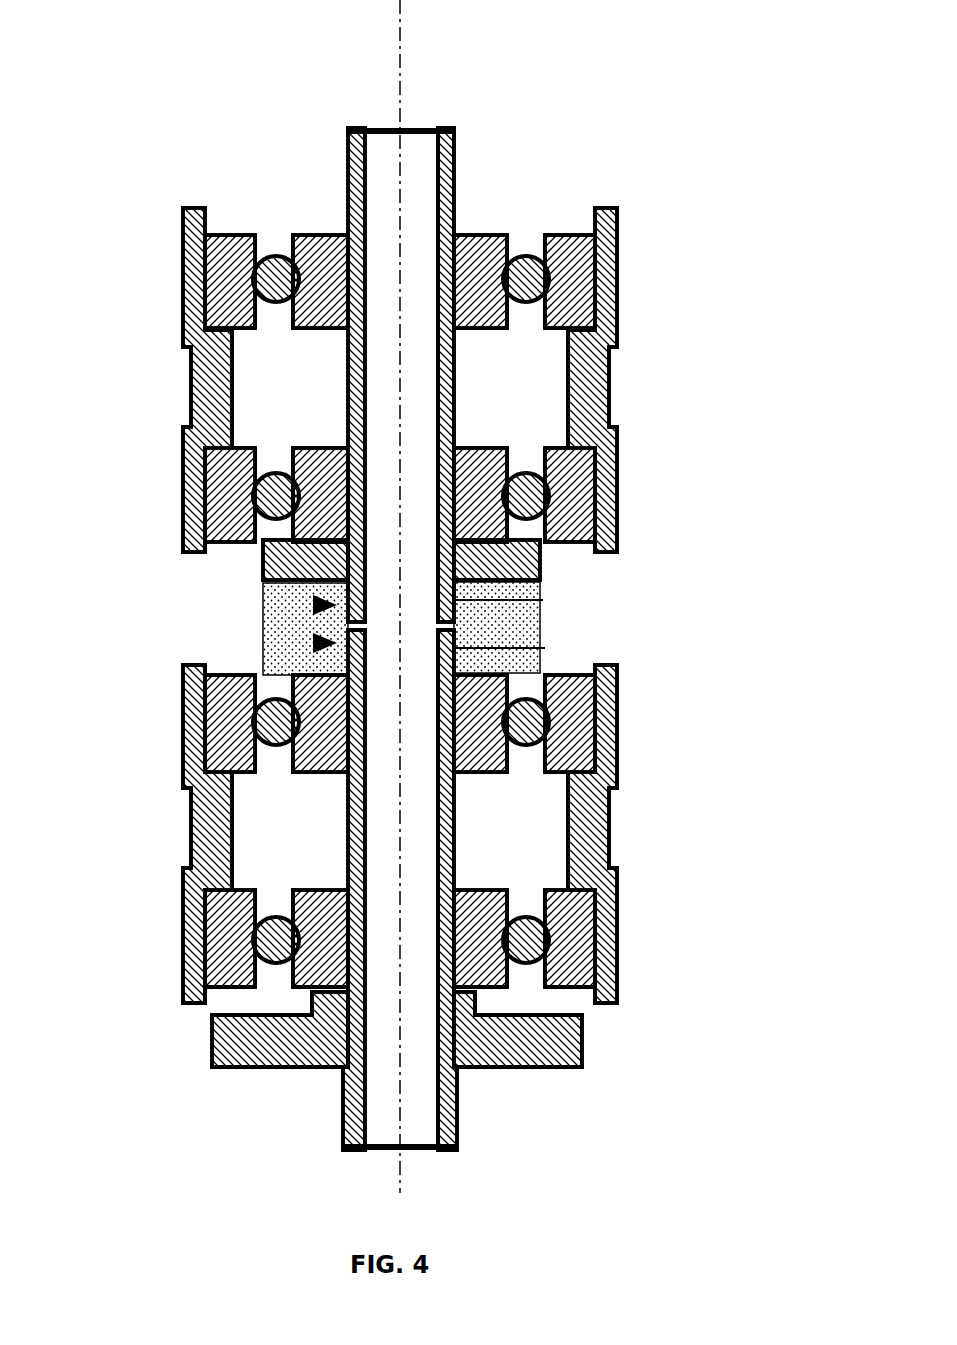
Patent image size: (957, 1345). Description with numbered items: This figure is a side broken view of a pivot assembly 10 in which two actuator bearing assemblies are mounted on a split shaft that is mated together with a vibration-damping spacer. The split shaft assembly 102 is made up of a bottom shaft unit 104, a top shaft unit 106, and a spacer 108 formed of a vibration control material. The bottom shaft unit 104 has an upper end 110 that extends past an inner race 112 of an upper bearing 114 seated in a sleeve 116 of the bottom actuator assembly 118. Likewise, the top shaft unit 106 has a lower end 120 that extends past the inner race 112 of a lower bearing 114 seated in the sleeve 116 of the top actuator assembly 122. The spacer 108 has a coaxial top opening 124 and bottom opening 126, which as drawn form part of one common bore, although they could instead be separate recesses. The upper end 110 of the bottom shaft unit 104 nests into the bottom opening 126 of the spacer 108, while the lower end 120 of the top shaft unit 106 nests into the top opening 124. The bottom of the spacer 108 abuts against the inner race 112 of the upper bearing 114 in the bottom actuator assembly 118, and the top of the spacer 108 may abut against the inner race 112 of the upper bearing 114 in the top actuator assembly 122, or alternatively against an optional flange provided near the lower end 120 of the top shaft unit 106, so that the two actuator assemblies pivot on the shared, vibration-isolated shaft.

The pivot assembly 10 is at (708, 100).
The split shaft assembly 102 is at (364, 95).
The bottom shaft unit 104 is at (485, 1055).
The top shaft unit 106 is at (456, 128).
The spacer 108 is at (517, 619).
The upper end 110 is at (545, 648).
The inner race 112 is at (318, 333).
The bearing 114 is at (262, 185).
The sleeve 116 is at (607, 372).
The bottom actuator assembly 118 is at (140, 827).
The lower end 120 is at (543, 600).
The top actuator assembly 122 is at (140, 374).
The top opening 124 is at (315, 605).
The bottom opening 126 is at (315, 643).